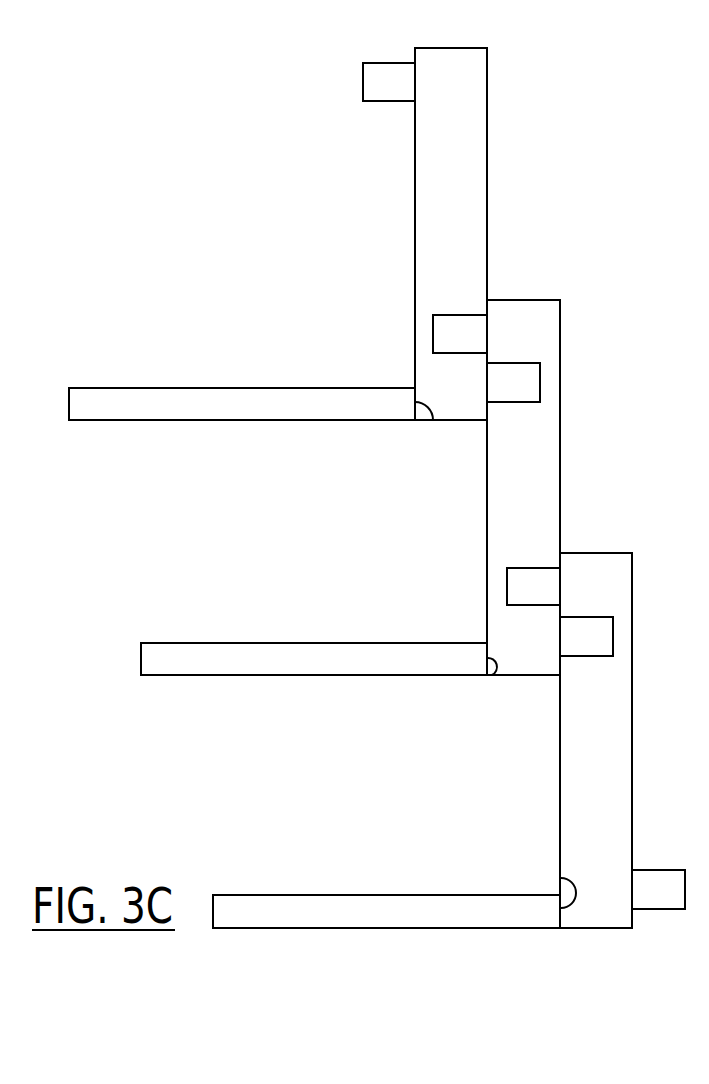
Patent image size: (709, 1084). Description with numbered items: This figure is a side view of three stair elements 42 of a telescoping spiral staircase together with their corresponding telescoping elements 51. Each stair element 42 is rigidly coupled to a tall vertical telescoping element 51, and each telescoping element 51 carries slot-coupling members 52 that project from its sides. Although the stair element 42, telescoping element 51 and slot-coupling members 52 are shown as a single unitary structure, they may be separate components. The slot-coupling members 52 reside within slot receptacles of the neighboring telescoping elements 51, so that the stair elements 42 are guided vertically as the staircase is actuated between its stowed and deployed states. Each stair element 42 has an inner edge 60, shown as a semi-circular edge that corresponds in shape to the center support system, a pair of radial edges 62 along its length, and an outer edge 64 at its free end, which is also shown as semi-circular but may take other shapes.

The stair element 42 is at (262, 420).
The telescoping element 51 is at (488, 193).
The slot-coupling member 52 is at (371, 101).
The inner edge 60 is at (432, 420).
The radial edge 62 is at (322, 672).
The outer edge 64 is at (69, 400).